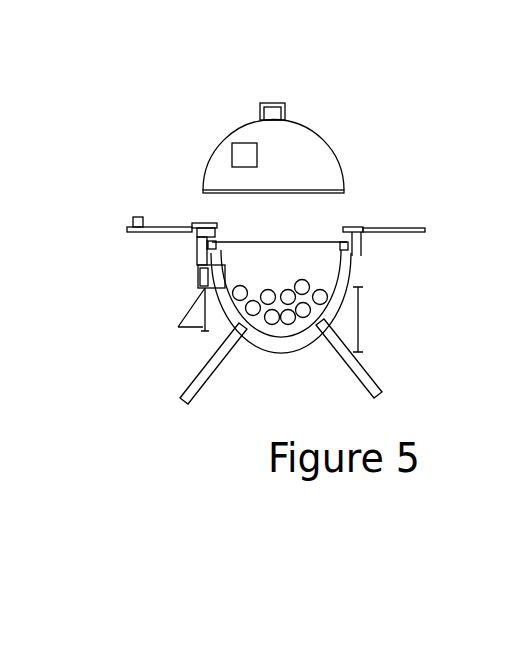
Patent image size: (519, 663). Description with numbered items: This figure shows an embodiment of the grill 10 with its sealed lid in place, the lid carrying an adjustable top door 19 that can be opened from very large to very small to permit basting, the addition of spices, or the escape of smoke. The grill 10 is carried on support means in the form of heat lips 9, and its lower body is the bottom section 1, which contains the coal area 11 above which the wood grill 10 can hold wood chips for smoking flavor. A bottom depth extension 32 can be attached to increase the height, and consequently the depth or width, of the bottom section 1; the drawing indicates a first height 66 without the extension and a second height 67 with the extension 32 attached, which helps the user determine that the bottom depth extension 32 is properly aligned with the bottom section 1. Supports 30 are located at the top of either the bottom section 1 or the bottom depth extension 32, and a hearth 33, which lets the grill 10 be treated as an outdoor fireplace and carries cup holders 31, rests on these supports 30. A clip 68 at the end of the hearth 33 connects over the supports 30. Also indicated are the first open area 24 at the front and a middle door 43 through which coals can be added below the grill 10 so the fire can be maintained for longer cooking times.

The bottom section 1 is at (260, 243).
The heat lips 9 is at (197, 244).
The grill 10 is at (299, 243).
The coal area 11 is at (335, 327).
The top door 19 is at (242, 165).
The first open area 24 is at (198, 278).
The supports 30 is at (195, 225).
The cup holders 31 is at (127, 229).
The bottom depth extension 32 is at (363, 230).
The hearth 33 is at (402, 232).
The middle door 43 is at (178, 327).
The first height 66 is at (208, 333).
The second height 67 is at (360, 296).
The clip 68 is at (212, 228).